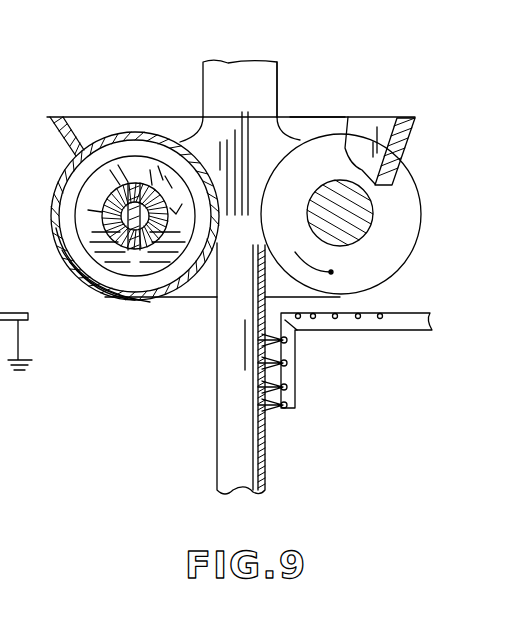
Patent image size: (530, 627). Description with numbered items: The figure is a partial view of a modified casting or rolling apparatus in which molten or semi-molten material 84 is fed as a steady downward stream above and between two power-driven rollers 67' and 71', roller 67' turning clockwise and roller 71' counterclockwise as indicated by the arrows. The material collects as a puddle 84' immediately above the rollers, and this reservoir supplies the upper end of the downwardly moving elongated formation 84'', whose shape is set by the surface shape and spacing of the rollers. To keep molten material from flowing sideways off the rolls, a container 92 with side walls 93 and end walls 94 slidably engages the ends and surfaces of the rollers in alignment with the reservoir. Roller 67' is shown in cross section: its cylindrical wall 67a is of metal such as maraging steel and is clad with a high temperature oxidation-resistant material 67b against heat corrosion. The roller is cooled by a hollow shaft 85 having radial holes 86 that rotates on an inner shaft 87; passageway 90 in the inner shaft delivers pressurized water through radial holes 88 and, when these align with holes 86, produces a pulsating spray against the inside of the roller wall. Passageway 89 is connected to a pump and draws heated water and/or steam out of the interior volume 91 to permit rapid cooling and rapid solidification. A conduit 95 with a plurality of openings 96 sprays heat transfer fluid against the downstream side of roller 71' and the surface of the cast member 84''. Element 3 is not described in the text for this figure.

The molten or semi-molten material 84 is at (240, 122).
The puddle of molten material 84' is at (305, 79).
The elongated formation 84'' is at (207, 368).
The hollow shaft 85 is at (72, 263).
The radial holes 86 is at (142, 190).
The inner shaft 87 is at (55, 170).
The holes 88 is at (16, 290).
The passageway 89 is at (127, 210).
The passageway 90 is at (150, 185).
The volume 91 is at (173, 300).
The container 92 is at (315, 117).
The side walls 93 is at (365, 118).
The end walls 94 is at (400, 120).
The conduit 95 is at (418, 330).
The openings 96 is at (380, 313).
The roller 67' is at (96, 268).
The cylindrical wall 67a is at (107, 296).
The high temperature oxidation-resistant material 67b is at (118, 302).
The roller 71' is at (351, 214).
The frame 3 is at (2, 299).